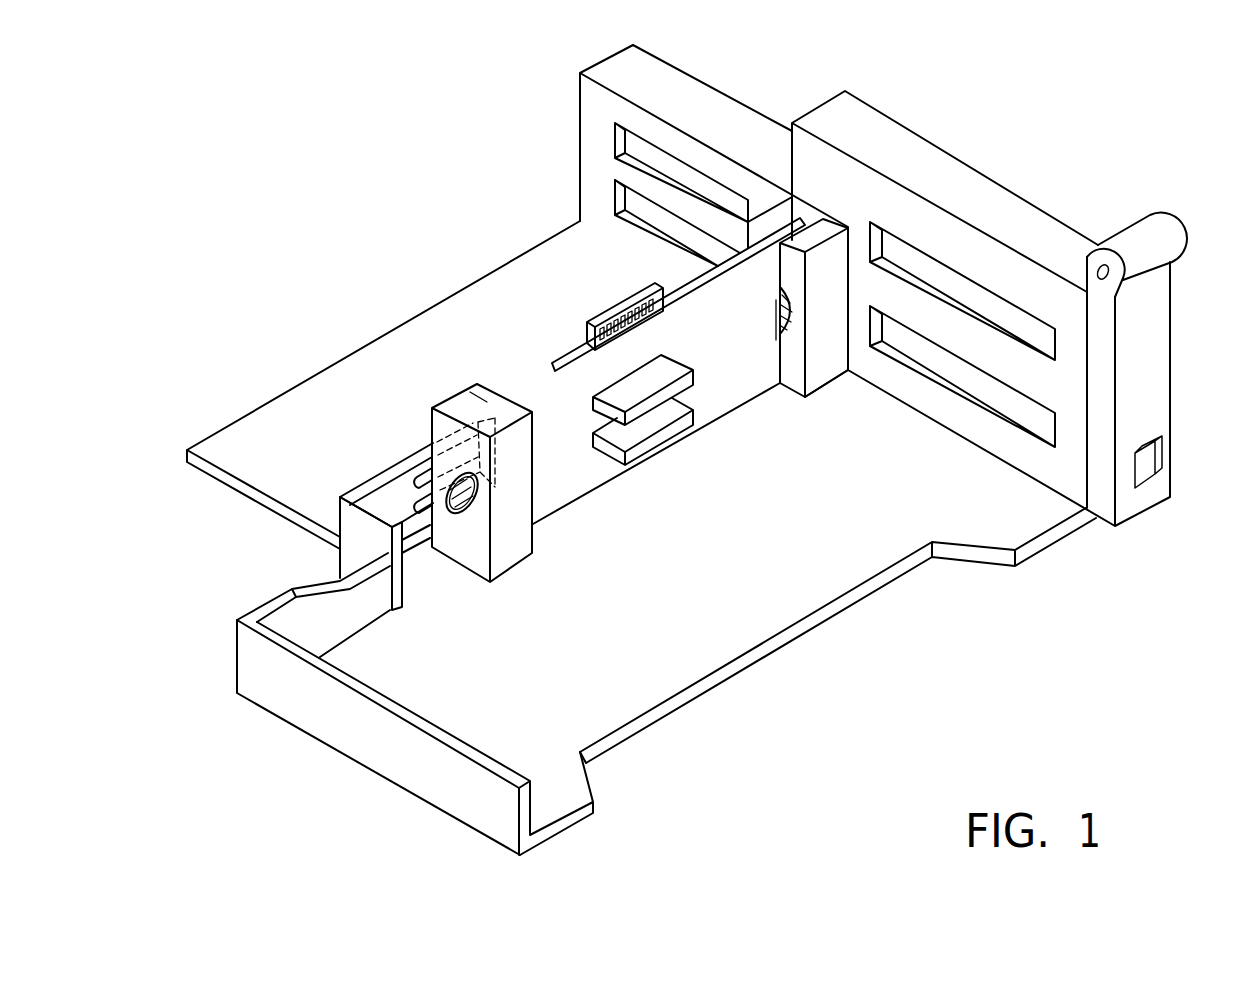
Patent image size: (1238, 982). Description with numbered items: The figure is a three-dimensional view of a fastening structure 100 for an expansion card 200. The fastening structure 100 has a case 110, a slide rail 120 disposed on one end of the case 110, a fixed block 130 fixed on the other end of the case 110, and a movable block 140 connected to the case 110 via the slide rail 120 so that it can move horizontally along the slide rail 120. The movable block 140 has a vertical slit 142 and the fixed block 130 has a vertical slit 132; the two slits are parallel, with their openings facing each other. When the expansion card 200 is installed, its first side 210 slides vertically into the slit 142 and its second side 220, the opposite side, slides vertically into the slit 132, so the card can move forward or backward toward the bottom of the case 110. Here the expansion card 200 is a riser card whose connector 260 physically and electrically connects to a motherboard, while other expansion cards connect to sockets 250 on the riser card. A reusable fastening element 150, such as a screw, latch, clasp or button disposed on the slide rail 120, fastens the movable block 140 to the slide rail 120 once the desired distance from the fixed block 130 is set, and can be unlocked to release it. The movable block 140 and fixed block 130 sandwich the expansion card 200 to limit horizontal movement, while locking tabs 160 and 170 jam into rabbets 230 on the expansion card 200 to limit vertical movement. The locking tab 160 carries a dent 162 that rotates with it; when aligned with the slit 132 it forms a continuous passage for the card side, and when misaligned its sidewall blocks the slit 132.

The fastening structure 100 is at (203, 128).
The case 110 is at (243, 663).
The slide rail 120 is at (413, 508).
The fixed block 130 is at (832, 222).
The slit 132 is at (818, 222).
The movable block 140 is at (448, 406).
The slit 142 is at (405, 452).
The fastening element 150 is at (400, 465).
The locking tab 160 is at (780, 322).
The dent 162 is at (848, 348).
The locking tab 170 is at (473, 513).
The expansion card 200 is at (717, 307).
The first side 210 is at (781, 226).
The second side 220 is at (481, 406).
The rabbets 230 is at (771, 336).
The sockets 250 is at (640, 442).
The connector 260 is at (628, 293).